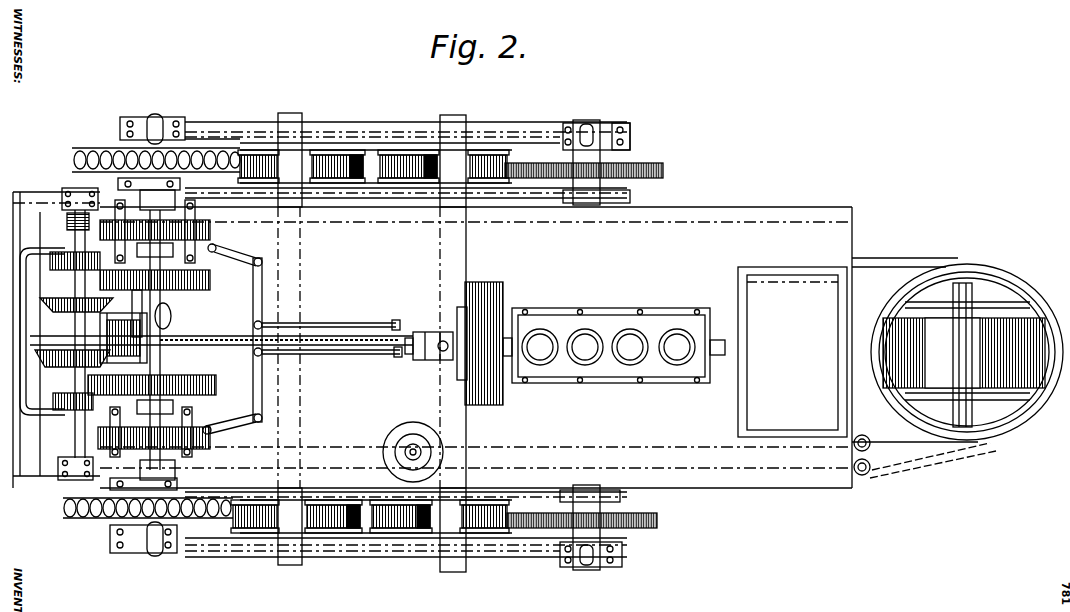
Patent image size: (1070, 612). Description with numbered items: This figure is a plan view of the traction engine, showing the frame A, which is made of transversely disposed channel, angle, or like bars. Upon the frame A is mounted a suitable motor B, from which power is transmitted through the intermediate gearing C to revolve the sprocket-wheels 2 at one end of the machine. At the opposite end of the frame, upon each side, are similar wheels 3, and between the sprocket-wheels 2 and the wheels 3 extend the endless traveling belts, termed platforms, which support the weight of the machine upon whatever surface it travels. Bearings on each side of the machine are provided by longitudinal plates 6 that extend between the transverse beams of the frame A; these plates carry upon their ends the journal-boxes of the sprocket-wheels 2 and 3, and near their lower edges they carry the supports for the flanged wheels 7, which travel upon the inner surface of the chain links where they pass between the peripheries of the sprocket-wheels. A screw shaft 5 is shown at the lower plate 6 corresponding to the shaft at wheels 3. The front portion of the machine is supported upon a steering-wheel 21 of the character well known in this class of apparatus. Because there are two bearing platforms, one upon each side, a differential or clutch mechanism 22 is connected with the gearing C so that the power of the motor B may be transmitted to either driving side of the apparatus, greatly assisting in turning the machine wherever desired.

The frame A is at (371, 210).
The motor B is at (597, 343).
The intermediate gearing C is at (168, 310).
The sprocket-wheels 2 is at (103, 517).
The wheels 3 is at (643, 165).
The screw shaft 5 is at (650, 516).
The longitudinal plates 6 is at (388, 543).
The flanged wheels 7 is at (315, 497).
The steering-wheels 21 is at (965, 368).
The differential or clutch mechanism 22 is at (200, 267).